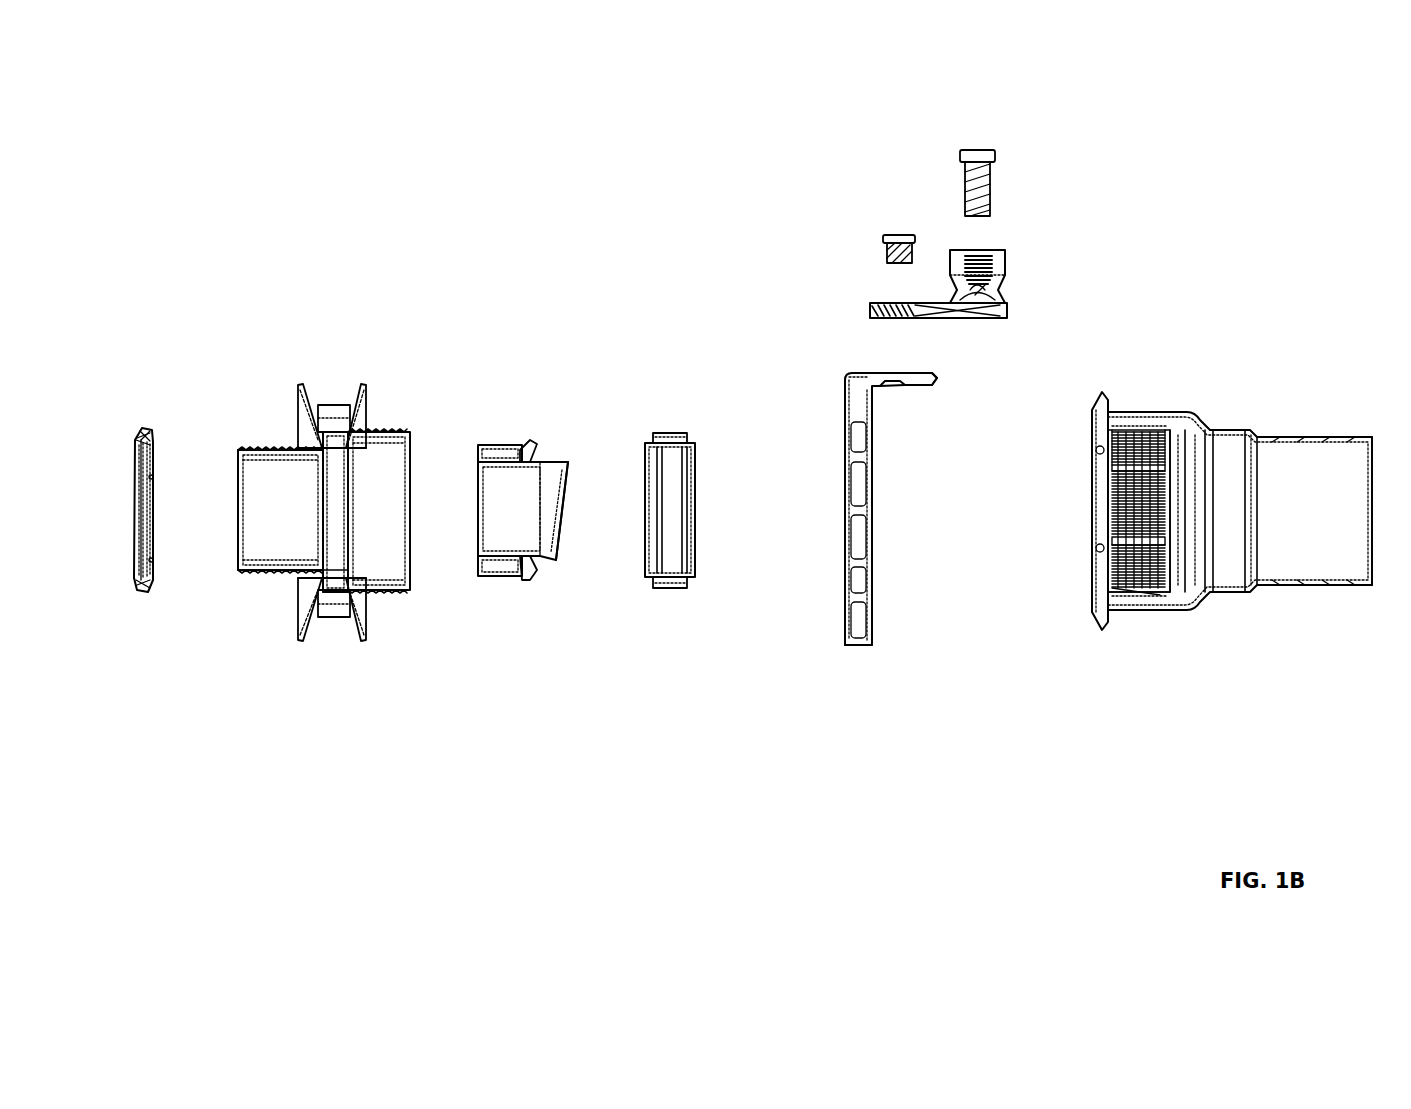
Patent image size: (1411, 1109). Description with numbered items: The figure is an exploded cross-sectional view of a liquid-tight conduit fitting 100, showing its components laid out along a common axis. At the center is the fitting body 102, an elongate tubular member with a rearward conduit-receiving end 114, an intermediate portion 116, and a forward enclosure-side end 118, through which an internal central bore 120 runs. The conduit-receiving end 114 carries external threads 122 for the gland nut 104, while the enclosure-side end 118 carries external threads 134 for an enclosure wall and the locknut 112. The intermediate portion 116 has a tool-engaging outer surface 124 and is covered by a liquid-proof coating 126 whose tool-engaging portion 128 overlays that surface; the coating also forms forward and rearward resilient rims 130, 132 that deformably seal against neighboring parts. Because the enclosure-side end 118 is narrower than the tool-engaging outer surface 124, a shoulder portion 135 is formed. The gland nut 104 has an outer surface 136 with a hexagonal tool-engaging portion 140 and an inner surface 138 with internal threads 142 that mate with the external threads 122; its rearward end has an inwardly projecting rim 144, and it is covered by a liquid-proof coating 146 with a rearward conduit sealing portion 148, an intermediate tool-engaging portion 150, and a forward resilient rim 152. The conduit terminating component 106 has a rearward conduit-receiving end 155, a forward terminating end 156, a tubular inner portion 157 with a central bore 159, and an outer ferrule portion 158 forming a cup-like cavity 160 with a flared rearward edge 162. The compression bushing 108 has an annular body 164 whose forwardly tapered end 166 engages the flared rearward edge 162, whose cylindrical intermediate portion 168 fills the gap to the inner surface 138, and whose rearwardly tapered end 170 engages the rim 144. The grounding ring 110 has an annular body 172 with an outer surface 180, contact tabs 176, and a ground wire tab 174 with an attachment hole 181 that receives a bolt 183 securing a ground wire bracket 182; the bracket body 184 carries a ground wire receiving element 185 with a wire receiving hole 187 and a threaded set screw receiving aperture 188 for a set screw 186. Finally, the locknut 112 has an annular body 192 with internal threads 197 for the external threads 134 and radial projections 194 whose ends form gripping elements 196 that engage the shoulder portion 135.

The liquid-tight conduit fitting 100 is at (605, 310).
The fitting body 102 is at (308, 683).
The gland nut 104 is at (1226, 398).
The conduit terminating component 106 is at (552, 577).
The compression bushing 108 is at (703, 420).
The grounding ring 110 is at (885, 665).
The locknut 112 is at (136, 531).
The rearward conduit-receiving end 114 is at (400, 410).
The intermediate portion 116 is at (343, 440).
The forward enclosure-side end 118 is at (272, 584).
The internal central bore 120 is at (280, 510).
The external threads 122 is at (387, 588).
The tool-engaging outer surface 124 is at (342, 593).
The liquid-proof coating 126 is at (315, 413).
The tool-engaging portion 128 is at (335, 407).
The forward facing resilient rim 130 is at (303, 600).
The rearward facing resilient rim 132 is at (358, 595).
The external threads 134 is at (270, 440).
The shoulder portion 135 is at (320, 580).
The outer surface 136 is at (1163, 432).
The inner surface 138 is at (1125, 447).
The hexagonal tool-engaging portion 140 is at (1135, 590).
The internal threads 142 is at (1125, 565).
The inwardly projecting rim 144 is at (1183, 582).
The liquid-proof coating 146 is at (1293, 595).
The rearward conduit sealing portion 148 is at (1335, 580).
The intermediate tool-engaging portion 150 is at (1130, 415).
The forward resilient rim 152 is at (1100, 595).
The rearward conduit-receiving end 155 is at (572, 540).
The forward terminating end 156 is at (473, 537).
The tubular inner portion 157 is at (555, 465).
The outer ferrule portion 158 is at (503, 575).
The central bore 159 is at (523, 511).
The cup-like cavity 160 is at (495, 455).
The flared rearward edge 162 is at (530, 450).
The annular body 164 is at (688, 603).
The forwardly tapered end 166 is at (652, 505).
The cylindrical intermediate portion 168 is at (668, 437).
The rearwardly tapered end 170 is at (690, 535).
The annular body 172 is at (878, 542).
The ground wire tab 174 is at (935, 383).
The contact tabs 176 is at (860, 580).
The outer surface 180 is at (858, 645).
The attachment hole 181 is at (915, 388).
The ground wire bracket 182 is at (940, 252).
The bolt 183 is at (885, 250).
The bracket body 184 is at (940, 318).
The ground wire receiving element 185 is at (1005, 265).
The set screw 186 is at (975, 190).
The wire receiving hole 187 is at (990, 290).
The threaded set screw receiving aperture 188 is at (990, 253).
The annular body 192 is at (128, 487).
The projections 194 is at (143, 430).
The gripping elements 196 is at (153, 478).
The internal threads 197 is at (140, 545).